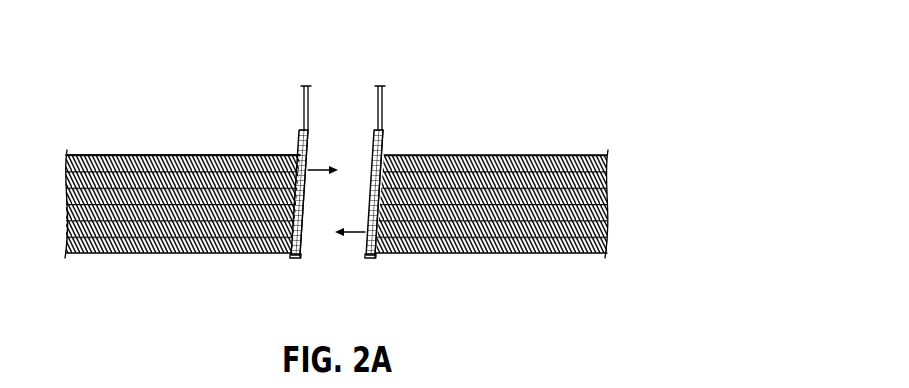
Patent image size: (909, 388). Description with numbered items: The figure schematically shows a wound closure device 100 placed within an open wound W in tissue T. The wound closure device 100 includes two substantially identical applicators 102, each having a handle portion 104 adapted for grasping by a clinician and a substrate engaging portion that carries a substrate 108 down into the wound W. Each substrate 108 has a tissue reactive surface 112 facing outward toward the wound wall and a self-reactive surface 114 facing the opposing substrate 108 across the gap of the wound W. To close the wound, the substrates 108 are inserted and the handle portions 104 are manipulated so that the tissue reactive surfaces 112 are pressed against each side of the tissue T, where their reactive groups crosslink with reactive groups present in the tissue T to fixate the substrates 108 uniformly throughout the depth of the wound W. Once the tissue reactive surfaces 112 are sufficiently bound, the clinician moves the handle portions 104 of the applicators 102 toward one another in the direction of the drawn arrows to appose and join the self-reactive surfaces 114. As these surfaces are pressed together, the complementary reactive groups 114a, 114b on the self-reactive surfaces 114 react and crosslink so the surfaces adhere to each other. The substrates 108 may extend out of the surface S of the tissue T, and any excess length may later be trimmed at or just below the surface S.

The wound closure device 100 is at (343, 158).
The applicator 102 is at (343, 163).
The handle portion 104 is at (304, 103).
The substrate 108 is at (338, 196).
The tissue reactive surface 112 is at (290, 256).
The self-reactive surface 114 is at (315, 147).
The reactive groups 114a is at (300, 260).
The reactive groups 114b is at (373, 258).
The tissue T is at (140, 160).
The surface S is at (215, 156).
The wound W is at (337, 197).